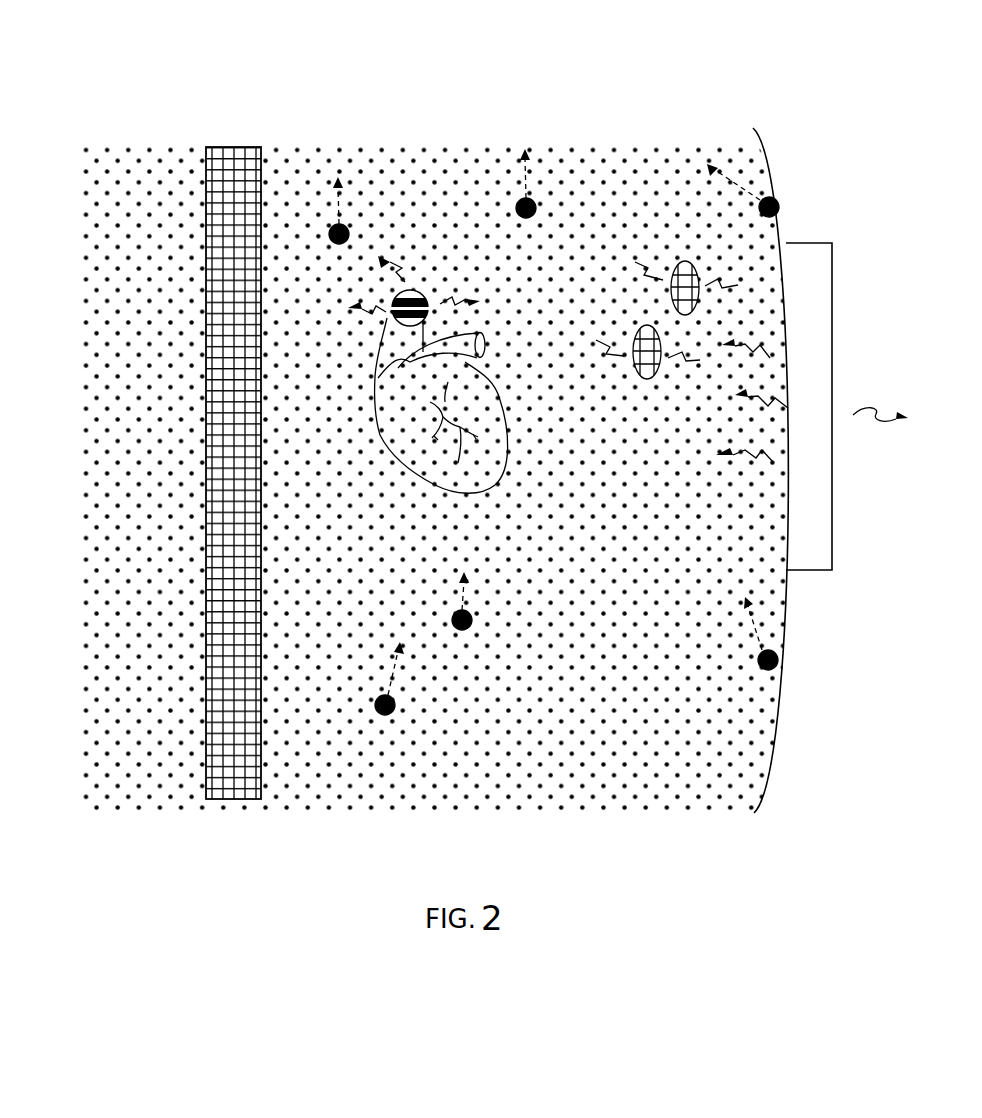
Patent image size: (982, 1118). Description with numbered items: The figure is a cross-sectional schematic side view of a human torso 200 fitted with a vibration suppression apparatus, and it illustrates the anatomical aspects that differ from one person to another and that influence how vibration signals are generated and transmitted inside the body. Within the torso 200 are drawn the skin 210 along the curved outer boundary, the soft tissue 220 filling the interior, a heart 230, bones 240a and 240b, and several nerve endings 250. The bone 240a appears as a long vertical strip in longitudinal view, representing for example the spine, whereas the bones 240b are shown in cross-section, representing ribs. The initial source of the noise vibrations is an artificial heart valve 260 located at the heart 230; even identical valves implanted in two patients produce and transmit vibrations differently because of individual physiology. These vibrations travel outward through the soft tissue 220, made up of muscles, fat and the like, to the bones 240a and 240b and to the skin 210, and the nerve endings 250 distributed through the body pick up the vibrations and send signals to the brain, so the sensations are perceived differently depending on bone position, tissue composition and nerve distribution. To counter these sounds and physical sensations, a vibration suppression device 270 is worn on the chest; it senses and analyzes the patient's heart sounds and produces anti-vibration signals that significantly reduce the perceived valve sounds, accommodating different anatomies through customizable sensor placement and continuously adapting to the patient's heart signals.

The human torso 200 is at (252, 76).
The skin 210 is at (768, 146).
The soft tissue 220 is at (550, 730).
The heart 230 is at (422, 462).
The bone 240a is at (218, 296).
The bones 240b is at (640, 373).
The nerve endings 250 is at (472, 620).
The artificial heart valve 260 is at (420, 292).
The vibration suppression device 270 is at (834, 364).